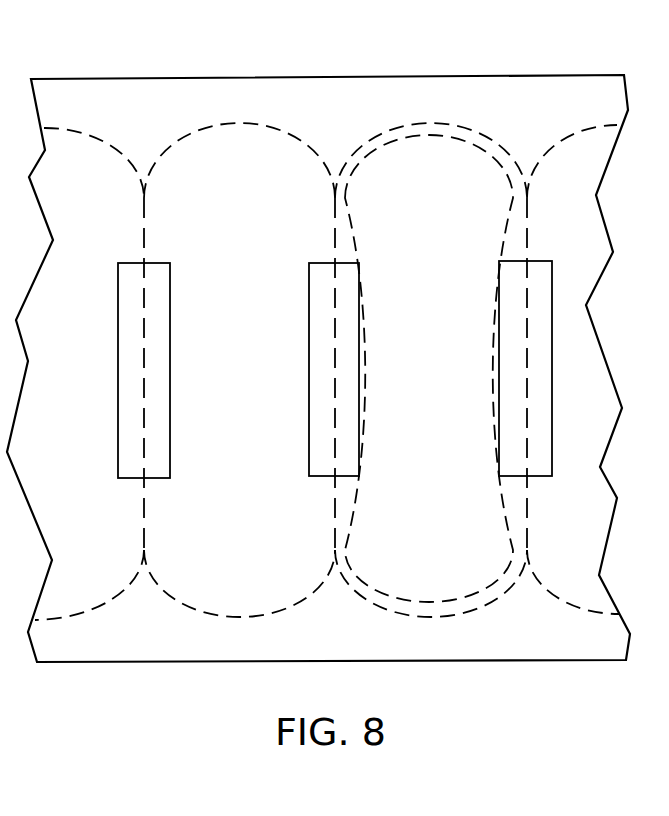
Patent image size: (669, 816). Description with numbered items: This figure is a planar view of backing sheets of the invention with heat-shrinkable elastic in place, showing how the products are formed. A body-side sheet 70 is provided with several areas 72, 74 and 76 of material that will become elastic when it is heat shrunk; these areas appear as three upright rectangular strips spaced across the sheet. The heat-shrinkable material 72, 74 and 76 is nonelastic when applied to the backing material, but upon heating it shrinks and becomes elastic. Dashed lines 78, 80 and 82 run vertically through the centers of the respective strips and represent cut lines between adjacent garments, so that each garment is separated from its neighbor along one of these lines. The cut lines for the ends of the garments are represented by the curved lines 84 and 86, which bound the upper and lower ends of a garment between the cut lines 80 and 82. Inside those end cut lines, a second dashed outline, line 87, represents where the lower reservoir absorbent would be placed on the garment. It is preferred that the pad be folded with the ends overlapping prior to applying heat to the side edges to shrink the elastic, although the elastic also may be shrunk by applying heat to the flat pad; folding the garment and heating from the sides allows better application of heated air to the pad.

The body-side sheet 70 is at (343, 100).
The heat-shrinkable material area 72 is at (152, 262).
The heat-shrinkable material area 74 is at (343, 261).
The heat-shrinkable material area 76 is at (533, 261).
The cut line 78 is at (147, 213).
The cut line 80 is at (332, 218).
The cut line 82 is at (527, 212).
The end cut line 84 is at (462, 124).
The end cut line 86 is at (442, 616).
The lower reservoir absorbent placement line 87 is at (420, 136).